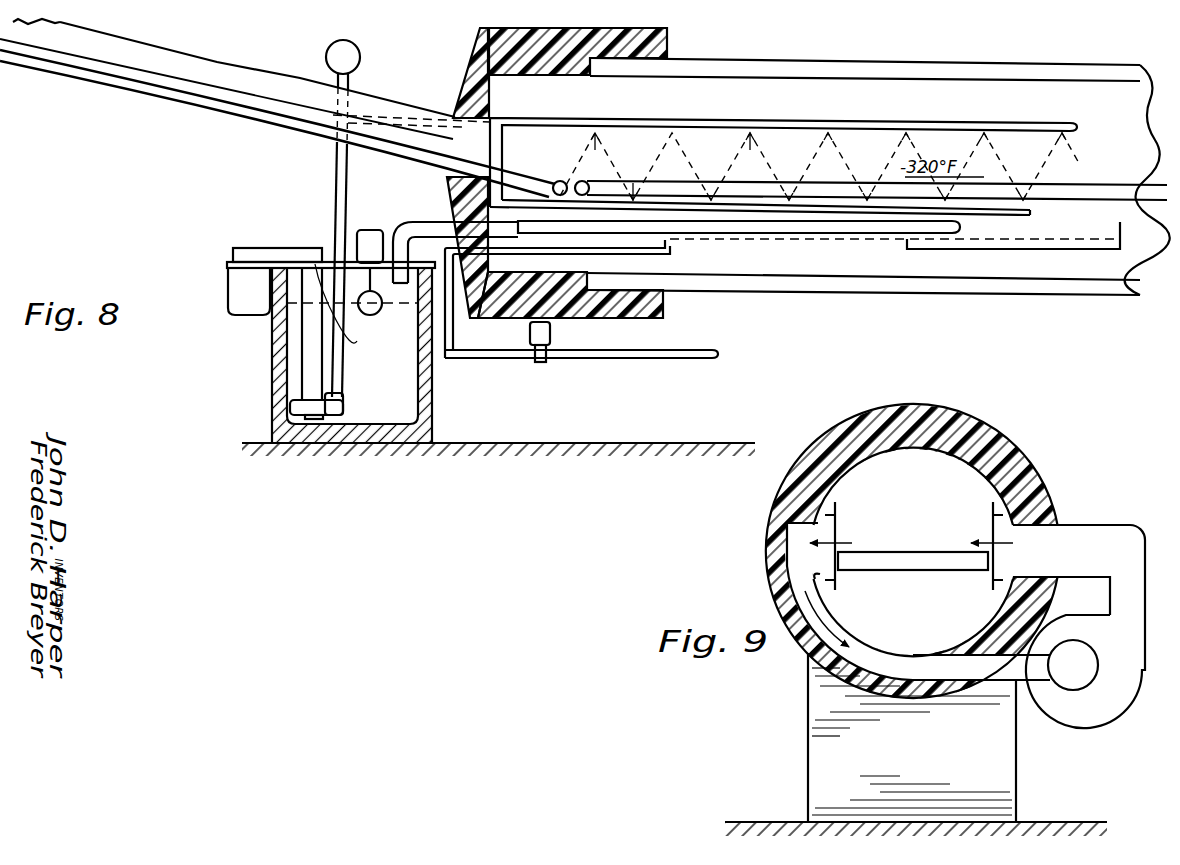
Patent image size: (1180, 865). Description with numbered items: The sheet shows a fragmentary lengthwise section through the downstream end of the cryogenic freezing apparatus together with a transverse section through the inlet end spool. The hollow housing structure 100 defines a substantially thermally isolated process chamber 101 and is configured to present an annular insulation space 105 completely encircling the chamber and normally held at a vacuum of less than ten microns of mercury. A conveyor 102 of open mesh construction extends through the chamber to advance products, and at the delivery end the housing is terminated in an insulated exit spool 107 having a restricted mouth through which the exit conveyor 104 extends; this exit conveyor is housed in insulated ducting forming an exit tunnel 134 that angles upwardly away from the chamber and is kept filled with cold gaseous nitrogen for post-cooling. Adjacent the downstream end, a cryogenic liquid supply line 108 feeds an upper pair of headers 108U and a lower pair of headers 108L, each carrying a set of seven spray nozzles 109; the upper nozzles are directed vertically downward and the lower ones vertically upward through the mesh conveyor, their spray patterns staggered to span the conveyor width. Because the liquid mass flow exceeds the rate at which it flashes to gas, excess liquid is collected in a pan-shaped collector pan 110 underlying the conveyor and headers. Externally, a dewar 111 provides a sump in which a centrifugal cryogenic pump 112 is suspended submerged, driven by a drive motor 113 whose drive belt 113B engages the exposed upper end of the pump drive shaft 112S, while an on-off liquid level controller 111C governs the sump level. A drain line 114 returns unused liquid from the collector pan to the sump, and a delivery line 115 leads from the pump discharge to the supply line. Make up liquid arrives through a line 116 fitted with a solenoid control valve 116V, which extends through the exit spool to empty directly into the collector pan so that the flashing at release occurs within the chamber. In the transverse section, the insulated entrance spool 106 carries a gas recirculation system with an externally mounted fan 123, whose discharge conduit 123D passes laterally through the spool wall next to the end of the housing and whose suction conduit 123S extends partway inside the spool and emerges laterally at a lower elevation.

In FIG. 8, the hollow housing structure 100 is at (1004, 58).
In FIG. 8, the process chamber 101 is at (1058, 102).
In FIG. 9, the process chamber 101 is at (925, 468).
In FIG. 8, the conveyor 102 is at (1083, 181).
In FIG. 9, the conveyor 102 is at (932, 553).
In FIG. 8, the exit conveyor 104 is at (206, 90).
In FIG. 8, the annular insulation space 105 is at (889, 68).
In FIG. 9, the entrance spool 106 is at (987, 440).
In FIG. 8, the exit spool 107 is at (528, 68).
In FIG. 8, the cryogenic liquid supply line 108 is at (397, 107).
In FIG. 8, the upper pair of headers 108U is at (653, 124).
In FIG. 8, the lower pair of headers 108L is at (1012, 216).
In FIG. 8, the spray nozzles 109 is at (892, 163).
In FIG. 8, the collector pan 110 is at (752, 240).
In FIG. 8, the dewar 111 is at (430, 375).
In FIG. 8, the liquid level controller 111C is at (370, 241).
In FIG. 8, the cryogenic pump 112 is at (333, 415).
In FIG. 8, the pump drive shaft 112S is at (347, 332).
In FIG. 8, the drive motor 113 is at (228, 293).
In FIG. 8, the drive belt 113B is at (277, 245).
In FIG. 8, the drain line 114 is at (404, 220).
In FIG. 8, the delivery line 115 is at (336, 183).
In FIG. 8, the make up line 116 is at (578, 360).
In FIG. 8, the solenoid control valve 116V is at (551, 336).
In FIG. 9, the fan 123 is at (1142, 694).
In FIG. 9, the discharge conduit 123D is at (1105, 533).
In FIG. 9, the suction conduit 123S is at (987, 672).
In FIG. 8, the exit tunnel 134 is at (218, 62).